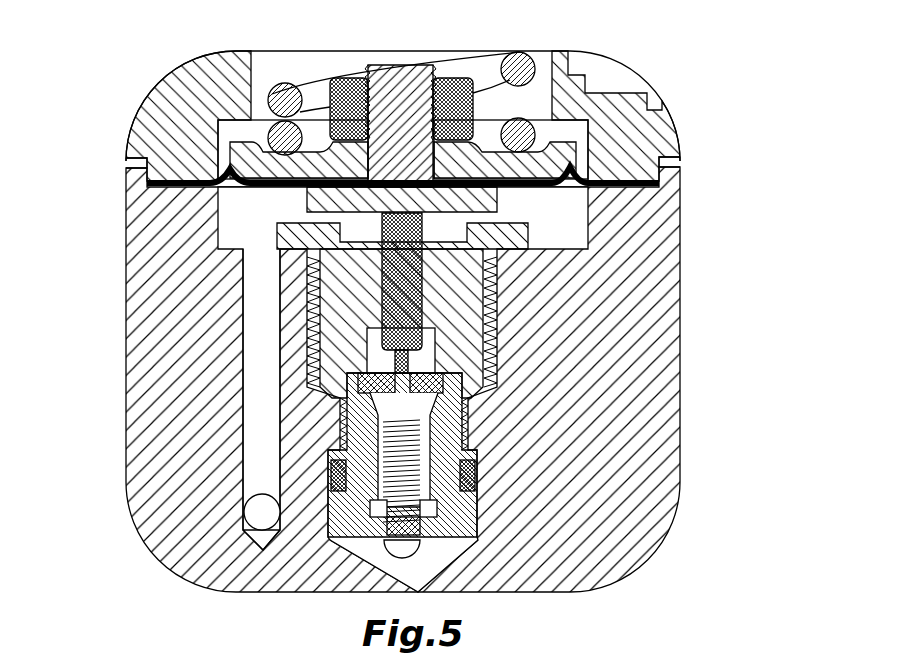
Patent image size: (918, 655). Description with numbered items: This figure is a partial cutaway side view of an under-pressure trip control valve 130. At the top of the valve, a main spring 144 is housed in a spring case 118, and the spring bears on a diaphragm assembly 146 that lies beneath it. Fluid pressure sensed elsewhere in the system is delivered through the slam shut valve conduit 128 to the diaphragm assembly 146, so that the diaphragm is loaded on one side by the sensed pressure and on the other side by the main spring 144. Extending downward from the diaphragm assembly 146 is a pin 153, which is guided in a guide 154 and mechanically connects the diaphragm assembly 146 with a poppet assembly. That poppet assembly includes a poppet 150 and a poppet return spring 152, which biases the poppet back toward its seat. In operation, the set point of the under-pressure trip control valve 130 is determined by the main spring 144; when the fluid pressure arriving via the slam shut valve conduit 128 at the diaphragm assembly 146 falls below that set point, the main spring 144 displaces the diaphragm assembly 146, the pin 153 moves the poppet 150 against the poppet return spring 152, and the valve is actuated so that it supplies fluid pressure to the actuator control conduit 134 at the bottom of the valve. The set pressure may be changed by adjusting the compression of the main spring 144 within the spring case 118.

The under-pressure trip control valve 130 is at (672, 68).
The main spring 144 is at (268, 96).
The spring case 118 is at (274, 68).
The diaphragm assembly 146 is at (215, 211).
The slam shut valve conduit 128 is at (243, 310).
The pin 153 is at (430, 290).
The guide 154 is at (497, 340).
The poppet 150 is at (453, 405).
The poppet return spring 152 is at (375, 452).
The actuator control conduit 134 is at (413, 552).